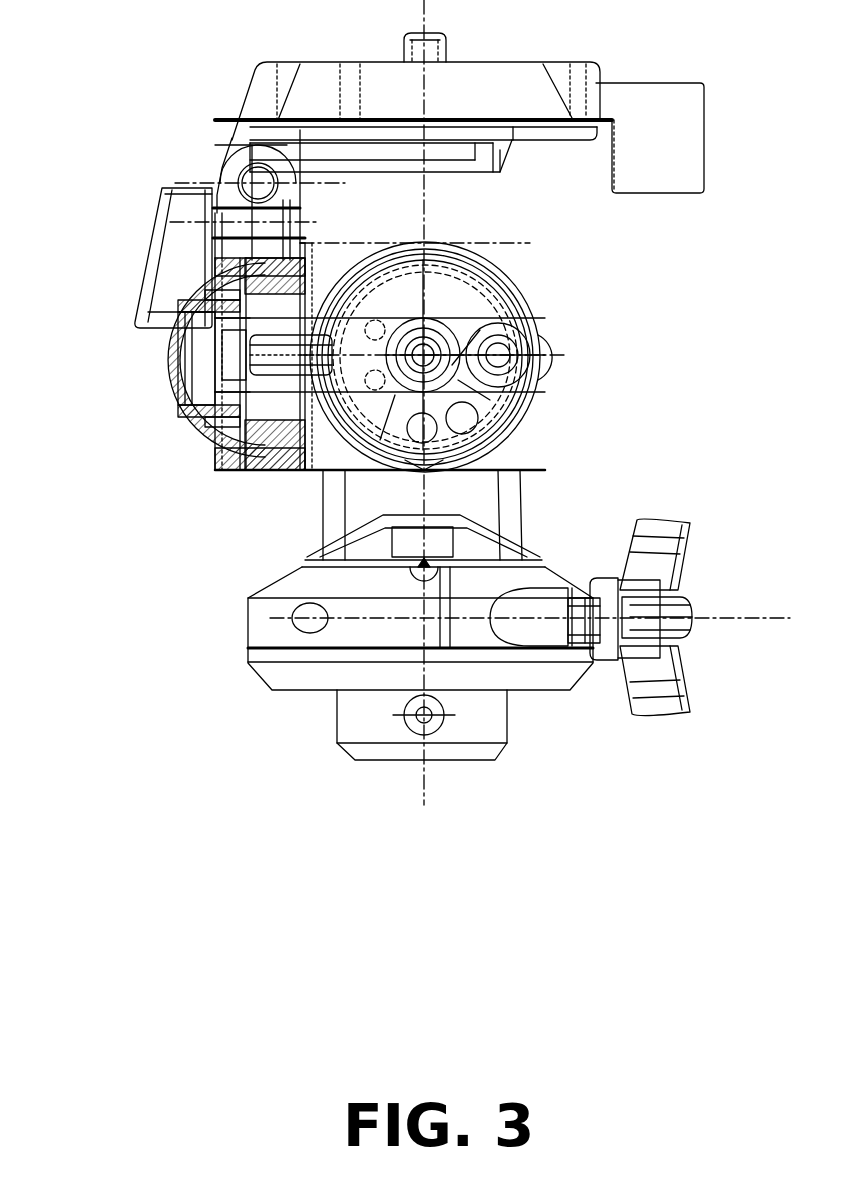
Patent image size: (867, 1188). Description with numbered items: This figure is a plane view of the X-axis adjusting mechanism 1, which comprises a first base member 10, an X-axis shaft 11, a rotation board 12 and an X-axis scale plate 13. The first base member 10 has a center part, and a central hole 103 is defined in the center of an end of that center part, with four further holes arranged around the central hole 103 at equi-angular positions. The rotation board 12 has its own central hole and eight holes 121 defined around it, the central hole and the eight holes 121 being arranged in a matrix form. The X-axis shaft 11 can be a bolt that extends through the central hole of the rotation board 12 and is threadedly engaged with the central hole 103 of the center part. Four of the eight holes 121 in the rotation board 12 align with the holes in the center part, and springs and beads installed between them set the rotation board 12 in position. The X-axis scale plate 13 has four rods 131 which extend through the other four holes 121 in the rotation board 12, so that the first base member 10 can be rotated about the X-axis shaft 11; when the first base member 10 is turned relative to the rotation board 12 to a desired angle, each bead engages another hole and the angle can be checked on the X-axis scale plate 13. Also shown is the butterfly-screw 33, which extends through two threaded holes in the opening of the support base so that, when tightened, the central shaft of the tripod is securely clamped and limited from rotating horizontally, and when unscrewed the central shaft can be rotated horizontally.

The X-axis adjusting mechanism 1 is at (168, 419).
The first base member 10 is at (233, 472).
The central hole 103 is at (282, 474).
The X-axis shaft 11 is at (178, 397).
The rotation board 12 is at (157, 280).
The holes 121 is at (163, 312).
The X-axis scale plate 13 is at (167, 357).
The rods 131 is at (200, 455).
The butterfly-screw 33 is at (680, 538).